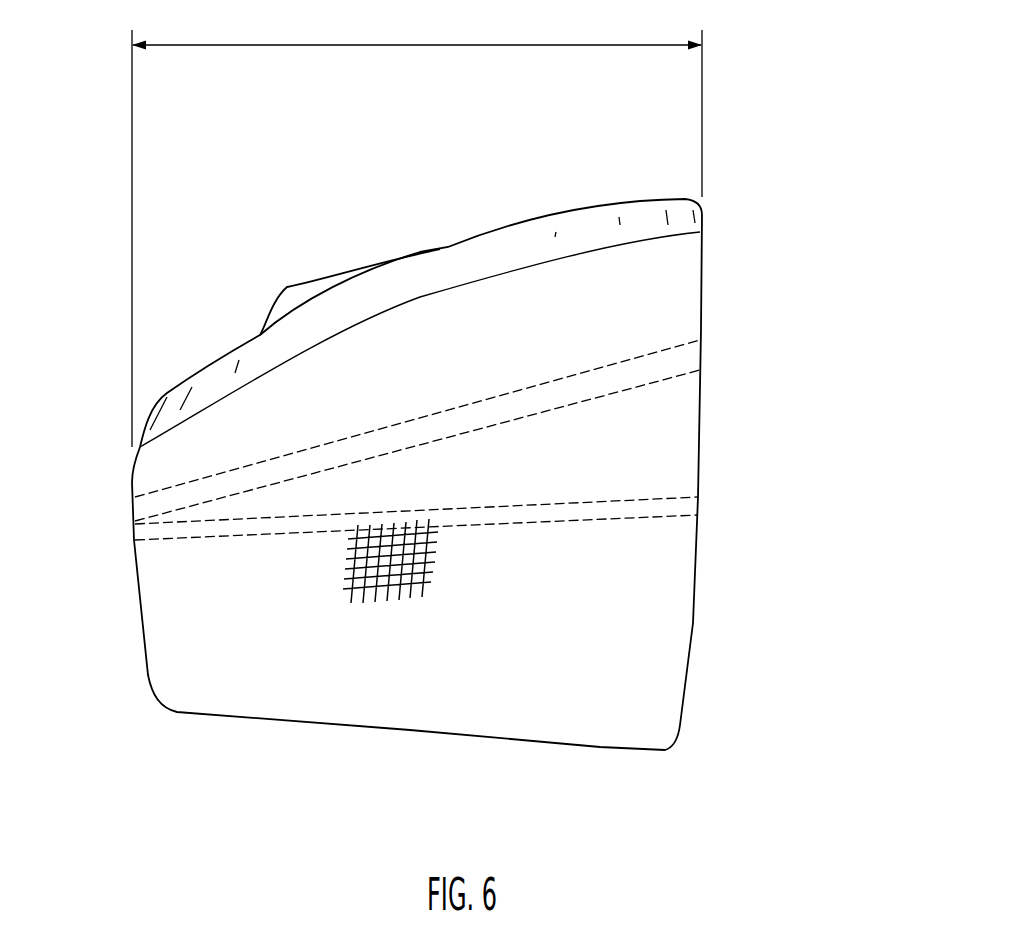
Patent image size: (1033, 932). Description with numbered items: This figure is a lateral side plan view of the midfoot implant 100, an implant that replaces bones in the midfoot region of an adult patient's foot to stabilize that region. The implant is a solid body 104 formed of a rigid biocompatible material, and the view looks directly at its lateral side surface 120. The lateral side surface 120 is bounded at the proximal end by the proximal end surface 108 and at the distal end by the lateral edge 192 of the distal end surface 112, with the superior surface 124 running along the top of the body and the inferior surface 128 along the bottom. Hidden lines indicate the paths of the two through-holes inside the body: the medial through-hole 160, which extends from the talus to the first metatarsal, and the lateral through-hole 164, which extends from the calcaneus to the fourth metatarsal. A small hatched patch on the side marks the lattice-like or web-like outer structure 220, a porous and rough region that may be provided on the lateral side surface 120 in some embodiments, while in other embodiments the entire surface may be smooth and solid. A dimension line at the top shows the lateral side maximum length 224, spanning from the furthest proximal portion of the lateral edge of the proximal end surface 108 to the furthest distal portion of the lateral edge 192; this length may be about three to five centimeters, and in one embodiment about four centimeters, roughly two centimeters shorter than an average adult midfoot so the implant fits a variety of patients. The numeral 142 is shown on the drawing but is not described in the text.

The midfoot implant 100 is at (782, 167).
The solid body 104 is at (665, 322).
The proximal end surface 108 is at (720, 465).
The distal end surface 112 is at (130, 535).
The lateral side surface 120 is at (620, 442).
The superior surface 124 is at (449, 246).
The inferior surface 128 is at (455, 738).
The rear edge 142 is at (697, 548).
The medial through-hole 160 is at (528, 522).
The lateral through-hole 164 is at (498, 396).
The lateral edge 192 is at (140, 597).
The lattice-like or web-like outer structure 220 is at (450, 578).
The lateral side maximum length 224 is at (347, 45).